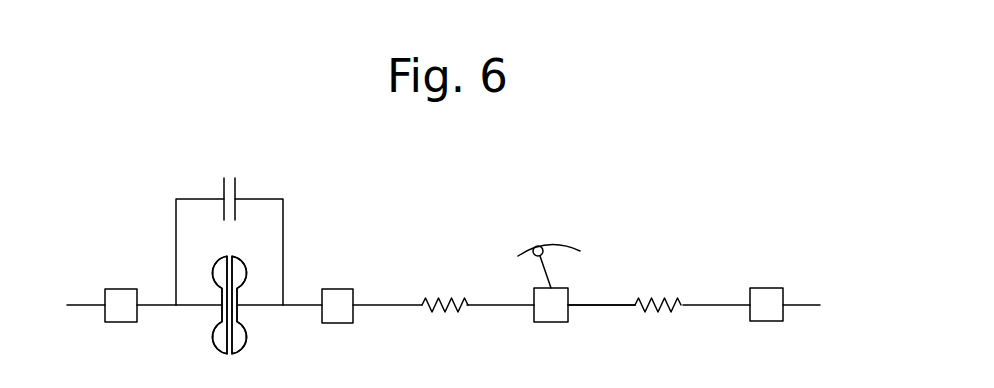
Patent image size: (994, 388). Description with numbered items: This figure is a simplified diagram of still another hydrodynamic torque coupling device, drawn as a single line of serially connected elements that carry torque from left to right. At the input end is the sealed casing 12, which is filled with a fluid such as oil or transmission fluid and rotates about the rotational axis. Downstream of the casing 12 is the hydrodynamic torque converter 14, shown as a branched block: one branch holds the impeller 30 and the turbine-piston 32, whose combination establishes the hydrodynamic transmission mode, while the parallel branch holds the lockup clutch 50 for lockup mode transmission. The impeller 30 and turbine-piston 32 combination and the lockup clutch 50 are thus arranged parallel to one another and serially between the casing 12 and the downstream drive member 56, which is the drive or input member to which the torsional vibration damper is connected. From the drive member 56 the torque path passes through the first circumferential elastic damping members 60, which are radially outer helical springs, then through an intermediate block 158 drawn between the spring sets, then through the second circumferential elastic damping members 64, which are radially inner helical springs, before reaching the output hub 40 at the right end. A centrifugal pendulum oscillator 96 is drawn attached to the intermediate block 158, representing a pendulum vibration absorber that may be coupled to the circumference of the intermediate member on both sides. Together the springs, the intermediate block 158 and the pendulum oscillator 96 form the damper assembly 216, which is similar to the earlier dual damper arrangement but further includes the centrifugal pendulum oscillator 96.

The sealed casing 12 is at (122, 295).
The hydrodynamic torque converter 14 is at (198, 252).
The impeller 30 is at (212, 342).
The turbine-piston 32 is at (247, 342).
The lockup clutch 50 is at (255, 179).
The drive member 56 is at (342, 293).
The first circumferential elastic damping members 60 is at (438, 318).
The second circumferential elastic damping members 64 is at (653, 315).
The centrifugal pendulum oscillator 96 is at (567, 238).
The variable element 158 is at (553, 313).
The damper assembly 216 is at (614, 277).
The output hub 40 is at (768, 293).